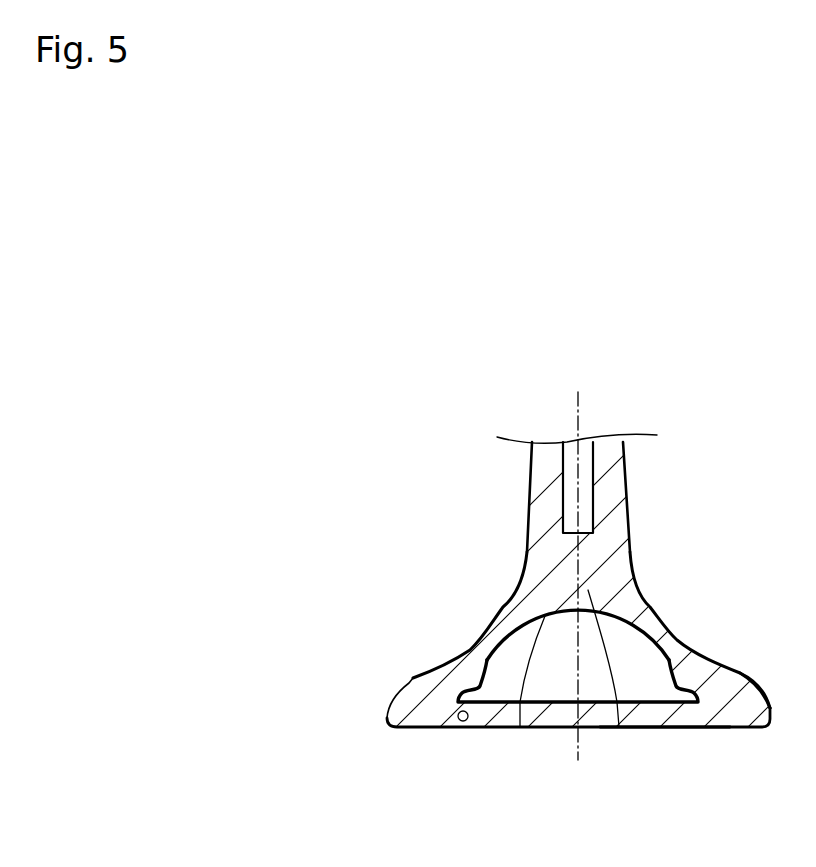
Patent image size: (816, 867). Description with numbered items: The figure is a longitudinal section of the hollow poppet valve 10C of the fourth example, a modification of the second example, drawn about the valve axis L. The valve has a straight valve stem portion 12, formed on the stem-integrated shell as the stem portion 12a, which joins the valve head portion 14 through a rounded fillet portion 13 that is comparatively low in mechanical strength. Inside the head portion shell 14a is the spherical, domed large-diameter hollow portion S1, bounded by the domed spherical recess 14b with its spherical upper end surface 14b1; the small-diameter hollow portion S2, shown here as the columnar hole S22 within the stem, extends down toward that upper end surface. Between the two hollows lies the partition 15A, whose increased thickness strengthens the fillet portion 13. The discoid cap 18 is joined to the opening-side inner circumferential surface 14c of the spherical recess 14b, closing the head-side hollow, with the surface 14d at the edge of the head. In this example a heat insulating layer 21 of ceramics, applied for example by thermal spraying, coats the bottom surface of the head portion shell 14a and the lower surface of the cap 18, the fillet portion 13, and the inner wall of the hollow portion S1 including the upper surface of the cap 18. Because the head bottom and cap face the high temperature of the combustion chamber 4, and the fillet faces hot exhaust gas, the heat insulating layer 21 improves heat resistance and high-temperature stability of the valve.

The hollow poppet valve 10C is at (478, 402).
The center axis line L is at (586, 411).
The valve stem portion 12 is at (440, 497).
The stem portion 12a is at (530, 467).
The small-diameter hollow portion S2 is at (648, 487).
The slot space S22 is at (596, 498).
The fillet portion 13 is at (492, 618).
The valve head portion 14 is at (412, 733).
The head portion shell 14a is at (512, 709).
The spherical recess 14b is at (489, 660).
The upper end surface 14b1 is at (520, 727).
The opening-side inner circumferential surface 14c is at (465, 727).
The base side edge portion 14d is at (440, 663).
The large-diameter hollow portion S1 is at (633, 640).
The partition 15A is at (619, 727).
The cap 18 is at (665, 727).
The heat insulating layer 21 is at (645, 591).
The combustion chamber 4 is at (777, 791).